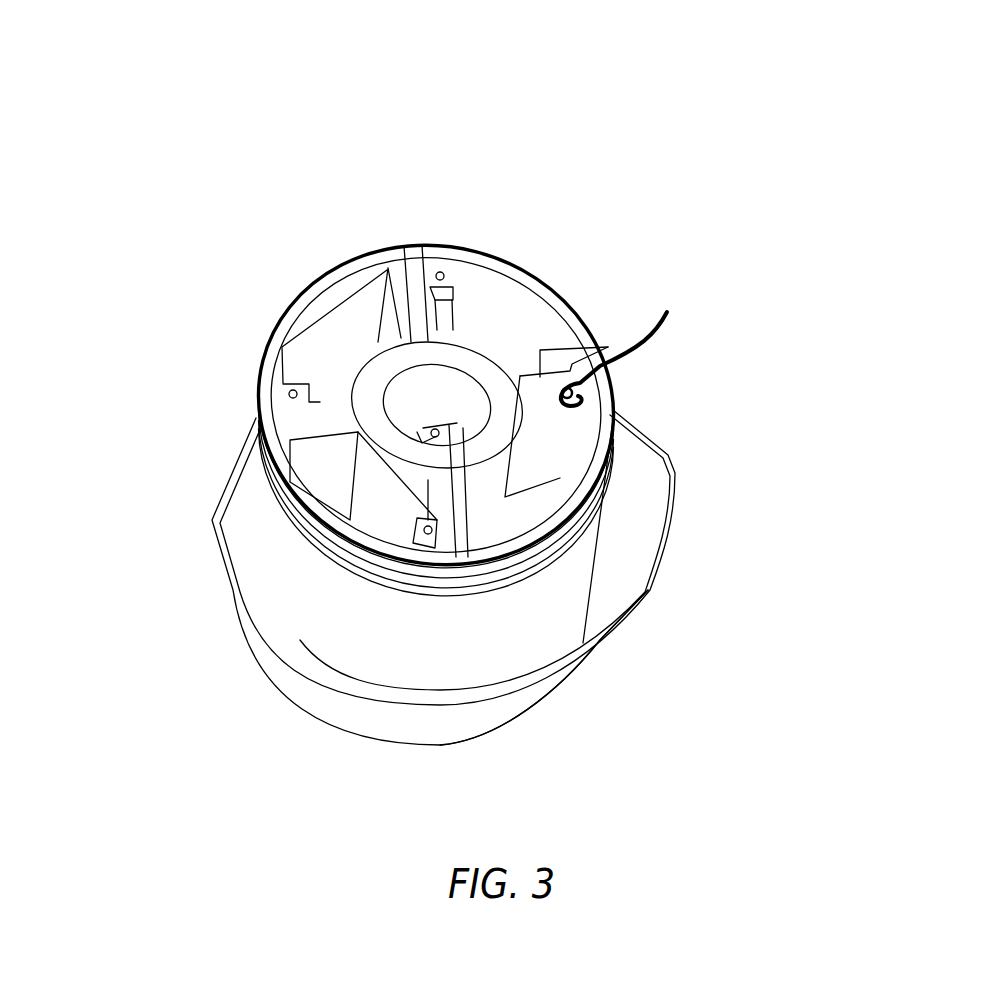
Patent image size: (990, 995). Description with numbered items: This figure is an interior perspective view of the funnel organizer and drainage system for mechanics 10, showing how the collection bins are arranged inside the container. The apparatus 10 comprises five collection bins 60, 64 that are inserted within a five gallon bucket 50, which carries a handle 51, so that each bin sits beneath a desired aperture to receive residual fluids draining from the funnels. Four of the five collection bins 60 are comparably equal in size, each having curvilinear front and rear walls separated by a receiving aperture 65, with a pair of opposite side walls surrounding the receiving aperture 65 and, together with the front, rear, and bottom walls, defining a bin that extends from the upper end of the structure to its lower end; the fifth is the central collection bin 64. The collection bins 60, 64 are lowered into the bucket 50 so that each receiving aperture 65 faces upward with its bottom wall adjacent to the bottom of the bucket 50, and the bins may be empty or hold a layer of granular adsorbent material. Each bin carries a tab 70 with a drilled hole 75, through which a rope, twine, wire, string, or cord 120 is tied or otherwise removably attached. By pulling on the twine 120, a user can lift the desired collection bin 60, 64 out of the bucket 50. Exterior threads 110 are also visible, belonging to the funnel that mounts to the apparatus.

The funnel organizer and drainage system for mechanics 10 is at (800, 196).
The bucket 50 is at (543, 598).
The handle 51 is at (598, 640).
The collection bin 60 is at (298, 318).
The central collection bin 64 is at (441, 272).
The receiving aperture 65 is at (433, 402).
The tab 70 is at (560, 340).
The drilled hole 75 is at (443, 273).
The exterior threads 110 is at (530, 557).
The twine 120 is at (668, 318).